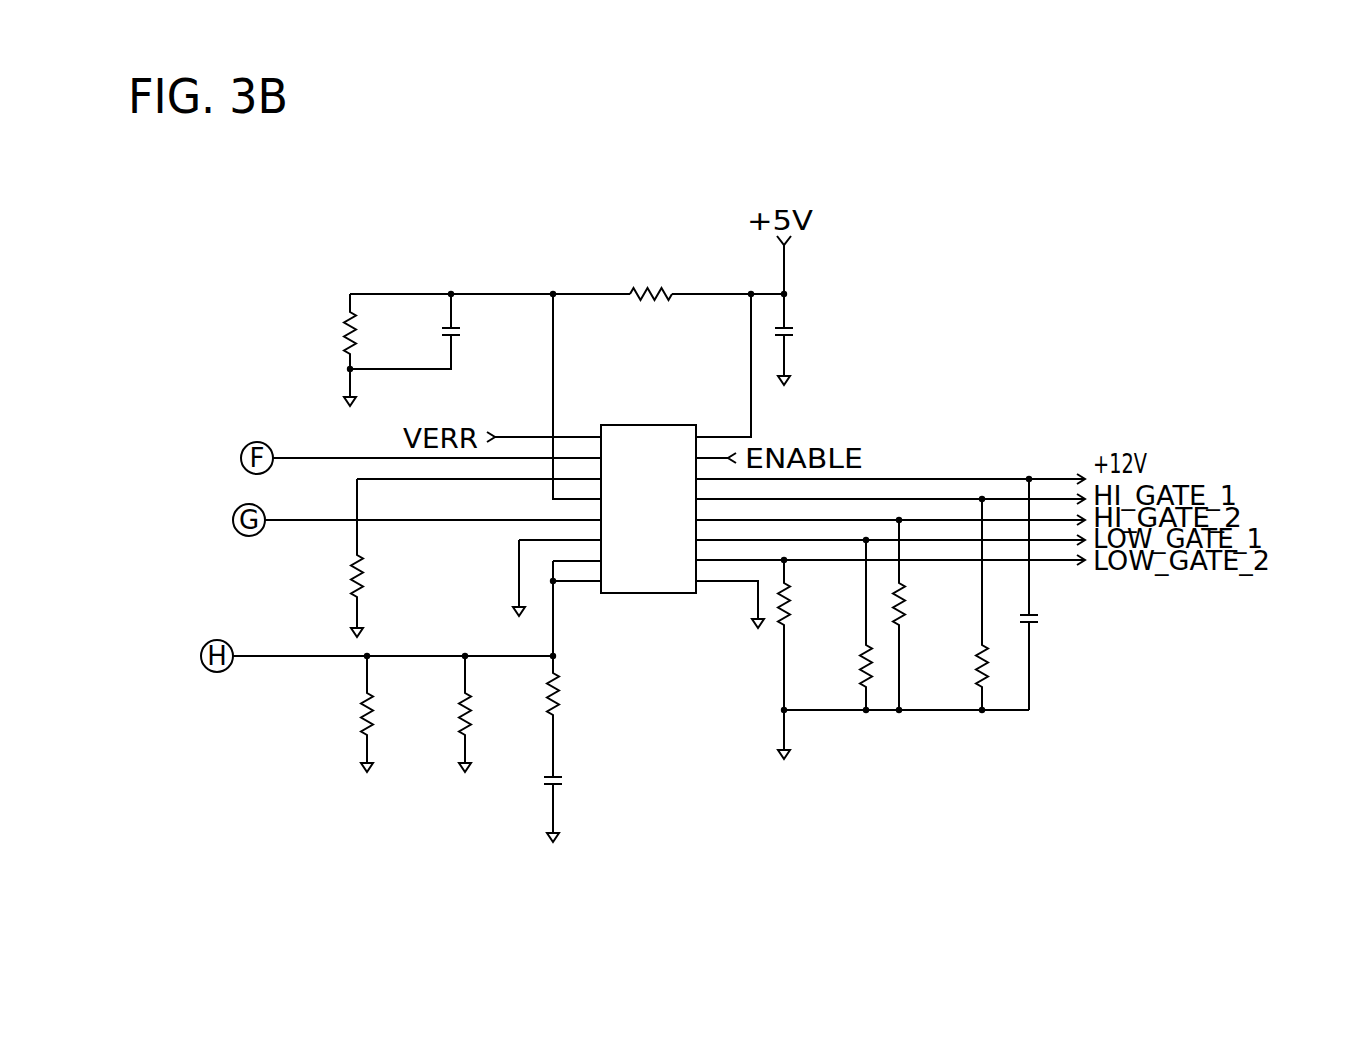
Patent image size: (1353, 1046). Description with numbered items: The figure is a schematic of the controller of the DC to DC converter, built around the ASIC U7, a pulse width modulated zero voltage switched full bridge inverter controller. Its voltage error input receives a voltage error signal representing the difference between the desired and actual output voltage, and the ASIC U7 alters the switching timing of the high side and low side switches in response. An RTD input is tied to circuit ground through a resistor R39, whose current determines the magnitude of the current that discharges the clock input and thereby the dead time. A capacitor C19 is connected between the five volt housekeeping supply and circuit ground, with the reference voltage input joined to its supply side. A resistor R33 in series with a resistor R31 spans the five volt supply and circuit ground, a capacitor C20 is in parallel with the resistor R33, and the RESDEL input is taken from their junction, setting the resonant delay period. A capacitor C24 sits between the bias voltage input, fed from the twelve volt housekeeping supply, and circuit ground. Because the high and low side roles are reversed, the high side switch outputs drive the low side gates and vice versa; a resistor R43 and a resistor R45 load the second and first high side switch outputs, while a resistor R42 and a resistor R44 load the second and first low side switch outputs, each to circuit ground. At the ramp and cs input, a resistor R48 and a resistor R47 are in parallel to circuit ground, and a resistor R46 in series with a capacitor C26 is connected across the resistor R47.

The resistor R31 is at (651, 274).
The resistor R33 is at (382, 350).
The capacitor C20 is at (439, 331).
The capacitor C19 is at (812, 352).
The ASIC U7 is at (648, 526).
The resistor R39 is at (393, 558).
The resistor R43 is at (820, 635).
The resistor R45 is at (832, 625).
The resistor R42 is at (933, 615).
The resistor R44 is at (947, 604).
The capacitor C24 is at (1065, 594).
The resistor R48 is at (404, 714).
The resistor R47 is at (502, 714).
The resistor R46 is at (589, 716).
The capacitor C26 is at (588, 805).